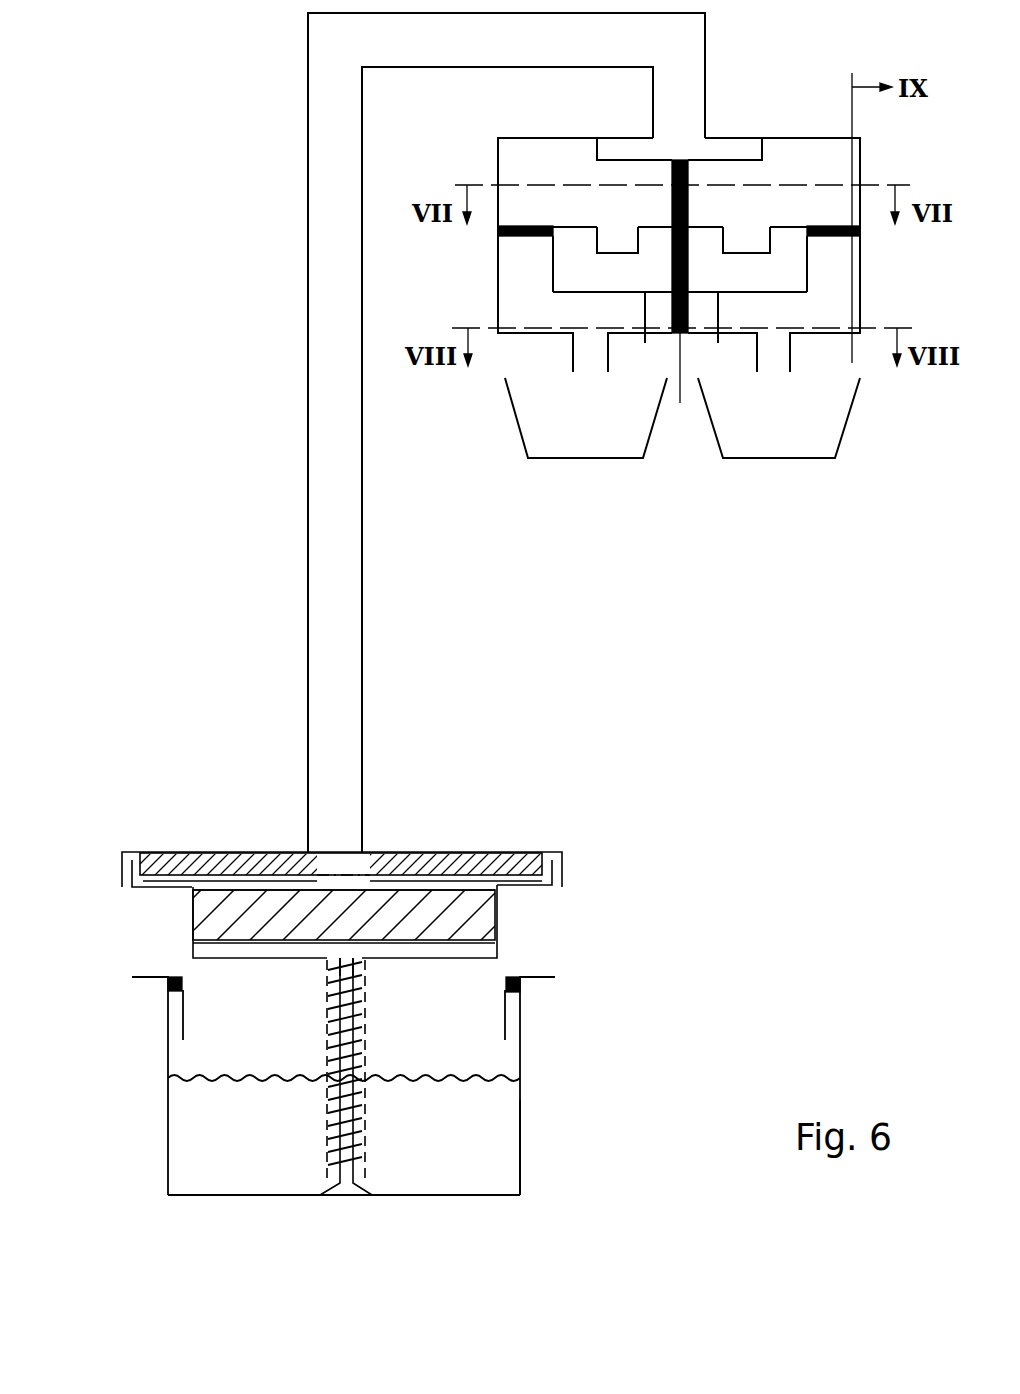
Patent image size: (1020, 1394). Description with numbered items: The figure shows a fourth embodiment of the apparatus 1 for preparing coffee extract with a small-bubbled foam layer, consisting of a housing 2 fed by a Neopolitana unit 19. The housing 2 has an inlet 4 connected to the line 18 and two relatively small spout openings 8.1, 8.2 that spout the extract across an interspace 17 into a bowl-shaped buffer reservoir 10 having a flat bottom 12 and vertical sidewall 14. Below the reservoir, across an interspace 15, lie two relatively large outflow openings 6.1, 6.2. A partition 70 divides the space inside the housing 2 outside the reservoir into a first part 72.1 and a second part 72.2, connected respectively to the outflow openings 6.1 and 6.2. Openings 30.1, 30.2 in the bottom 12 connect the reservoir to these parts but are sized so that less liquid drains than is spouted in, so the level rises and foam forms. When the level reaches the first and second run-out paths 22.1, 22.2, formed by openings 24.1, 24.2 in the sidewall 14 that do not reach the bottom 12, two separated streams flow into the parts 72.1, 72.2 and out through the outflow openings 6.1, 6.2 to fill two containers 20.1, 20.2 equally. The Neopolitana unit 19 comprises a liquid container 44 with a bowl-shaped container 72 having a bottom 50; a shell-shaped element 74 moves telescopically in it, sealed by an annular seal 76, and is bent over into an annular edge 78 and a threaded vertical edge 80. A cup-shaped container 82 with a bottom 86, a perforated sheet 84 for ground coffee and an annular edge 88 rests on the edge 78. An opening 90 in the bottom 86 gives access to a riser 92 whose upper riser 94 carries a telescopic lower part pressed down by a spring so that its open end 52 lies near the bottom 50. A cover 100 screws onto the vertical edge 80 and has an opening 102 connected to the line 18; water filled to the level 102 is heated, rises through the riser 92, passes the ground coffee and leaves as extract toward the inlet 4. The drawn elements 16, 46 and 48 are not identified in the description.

The apparatus 1 is at (430, 467).
The housing 2 is at (498, 254).
The inlet 4 is at (688, 125).
The outflow opening 6.1 is at (585, 357).
The outflow opening 6.2 is at (777, 357).
The spout opening 8.1 is at (632, 160).
The spout opening 8.2 is at (728, 162).
The buffer reservoir 10 is at (829, 280).
The bottom 12 is at (596, 291).
The vertical sidewall 14 is at (553, 258).
The interspace 15 is at (757, 322).
The piston rod 16 is at (367, 1122).
The interspace 17 is at (670, 219).
The line 18 is at (348, 593).
The Neopolitana unit 19 is at (530, 1055).
The container 20.1 is at (650, 408).
The container 20.2 is at (843, 410).
The first run-out path 22.1 is at (595, 243).
The second run-out path 22.2 is at (768, 245).
The opening 24.1 is at (612, 245).
The second opening 24.2 is at (747, 245).
The first opening 30.1 is at (641, 332).
The second opening 30.2 is at (722, 332).
The liquid container 44 is at (522, 1010).
The piston 46 is at (498, 948).
The compression spring 48 is at (365, 1055).
The bottom 50 is at (427, 1195).
The open end 52 is at (343, 1187).
The partition 70 is at (684, 297).
The bowl-shaped container 72 is at (522, 1157).
The first part 72.1 is at (536, 304).
The second part 72.2 is at (811, 304).
The shell-shaped element 74 is at (520, 972).
The annular seal 76 is at (167, 990).
The annular edge 78 is at (522, 892).
The vertical edge 80 is at (553, 877).
The cup-shaped container 82 is at (212, 925).
The perforated sheet 84 is at (265, 930).
The bottom 86 is at (285, 962).
The annular edge 88 is at (160, 885).
The opening 90 is at (347, 963).
The riser 92 is at (363, 1018).
The upper riser 94 is at (328, 1022).
The cover 100 is at (450, 858).
The opening 102 is at (342, 862).